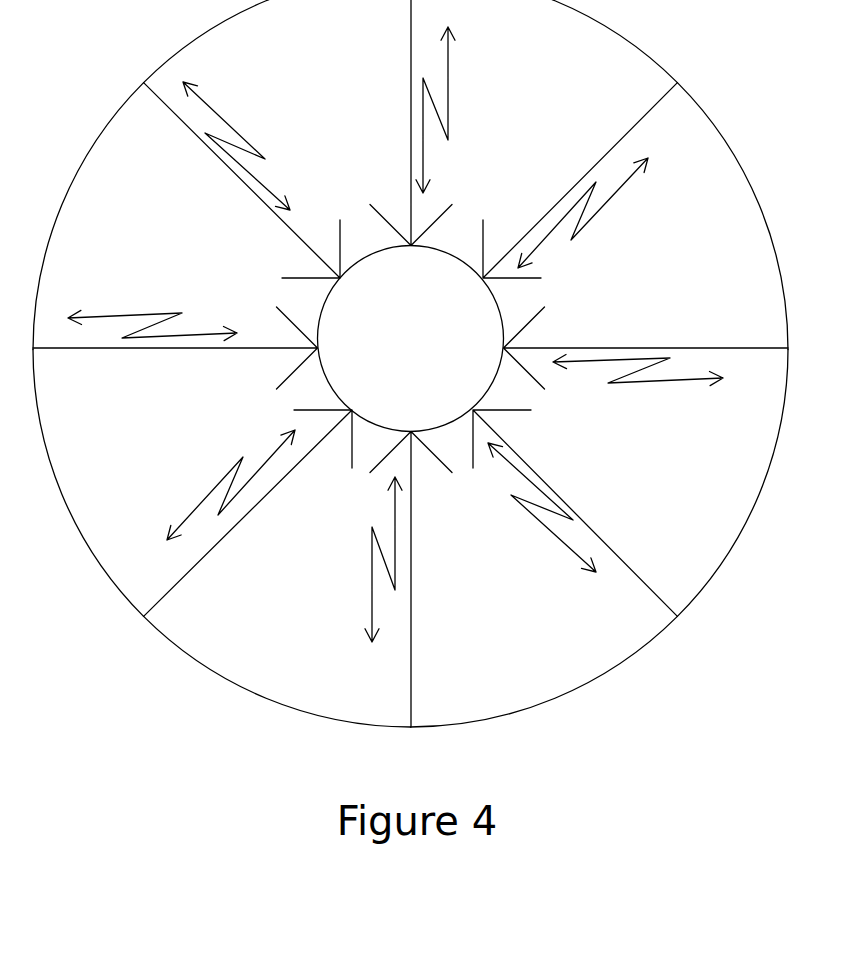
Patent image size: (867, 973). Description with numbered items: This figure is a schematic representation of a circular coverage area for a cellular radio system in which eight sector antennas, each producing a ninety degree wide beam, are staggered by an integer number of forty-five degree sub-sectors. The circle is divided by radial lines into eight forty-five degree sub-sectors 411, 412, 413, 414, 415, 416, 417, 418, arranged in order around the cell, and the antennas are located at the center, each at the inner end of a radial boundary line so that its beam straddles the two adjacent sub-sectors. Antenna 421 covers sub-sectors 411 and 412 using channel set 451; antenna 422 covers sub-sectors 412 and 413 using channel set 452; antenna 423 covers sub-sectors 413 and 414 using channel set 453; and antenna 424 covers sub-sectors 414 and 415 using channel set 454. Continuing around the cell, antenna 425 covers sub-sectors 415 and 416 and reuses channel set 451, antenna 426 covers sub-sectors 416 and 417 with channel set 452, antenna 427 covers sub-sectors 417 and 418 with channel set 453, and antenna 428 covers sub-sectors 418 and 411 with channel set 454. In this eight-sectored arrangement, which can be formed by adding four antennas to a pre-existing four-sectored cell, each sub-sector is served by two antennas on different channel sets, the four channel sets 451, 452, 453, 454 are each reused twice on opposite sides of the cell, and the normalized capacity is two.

The sub-sector 411 is at (544, 41).
The sub-sector 412 is at (732, 216).
The sub-sector 413 is at (732, 483).
The sub-sector 414 is at (544, 671).
The sub-sector 415 is at (277, 671).
The sub-sector 416 is at (88, 483).
The sub-sector 417 is at (88, 216).
The sub-sector 418 is at (277, 41).
The antenna 421 is at (557, 196).
The antenna 422 is at (620, 348).
The antenna 423 is at (554, 498).
The antenna 424 is at (411, 567).
The antenna 425 is at (271, 500).
The antenna 426 is at (203, 348).
The antenna 427 is at (264, 196).
The antenna 428 is at (411, 141).
The channel set 451 is at (598, 212).
The channel set 452 is at (640, 383).
The channel set 453 is at (235, 162).
The channel set 454 is at (410, 106).